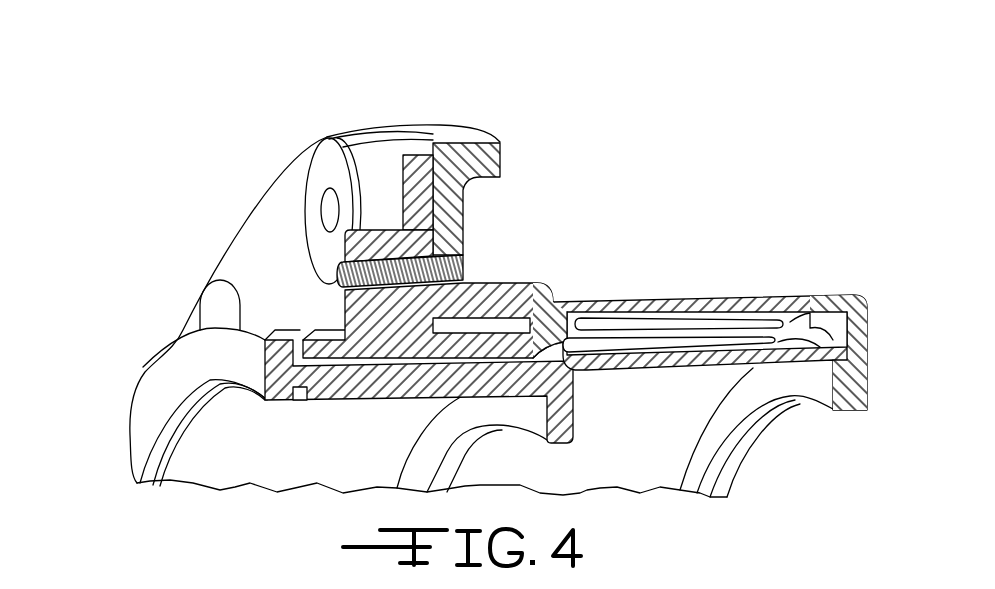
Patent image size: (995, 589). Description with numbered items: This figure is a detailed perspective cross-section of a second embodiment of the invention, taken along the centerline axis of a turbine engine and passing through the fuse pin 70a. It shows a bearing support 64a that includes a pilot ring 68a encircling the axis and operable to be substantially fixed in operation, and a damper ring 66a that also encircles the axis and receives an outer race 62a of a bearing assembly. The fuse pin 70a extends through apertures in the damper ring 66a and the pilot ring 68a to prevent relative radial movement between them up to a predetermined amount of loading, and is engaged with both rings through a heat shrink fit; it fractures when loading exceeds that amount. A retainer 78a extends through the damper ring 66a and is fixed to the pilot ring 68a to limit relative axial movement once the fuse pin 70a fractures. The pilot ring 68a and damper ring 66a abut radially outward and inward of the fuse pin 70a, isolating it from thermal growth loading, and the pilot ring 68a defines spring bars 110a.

The outer race 62a is at (290, 373).
The bearing support 64a is at (255, 125).
The damper ring 66a is at (420, 152).
The pilot ring 68a is at (467, 165).
The fuse pin 70a is at (463, 277).
The retainer 78a is at (328, 130).
The spring bars 110a is at (693, 322).